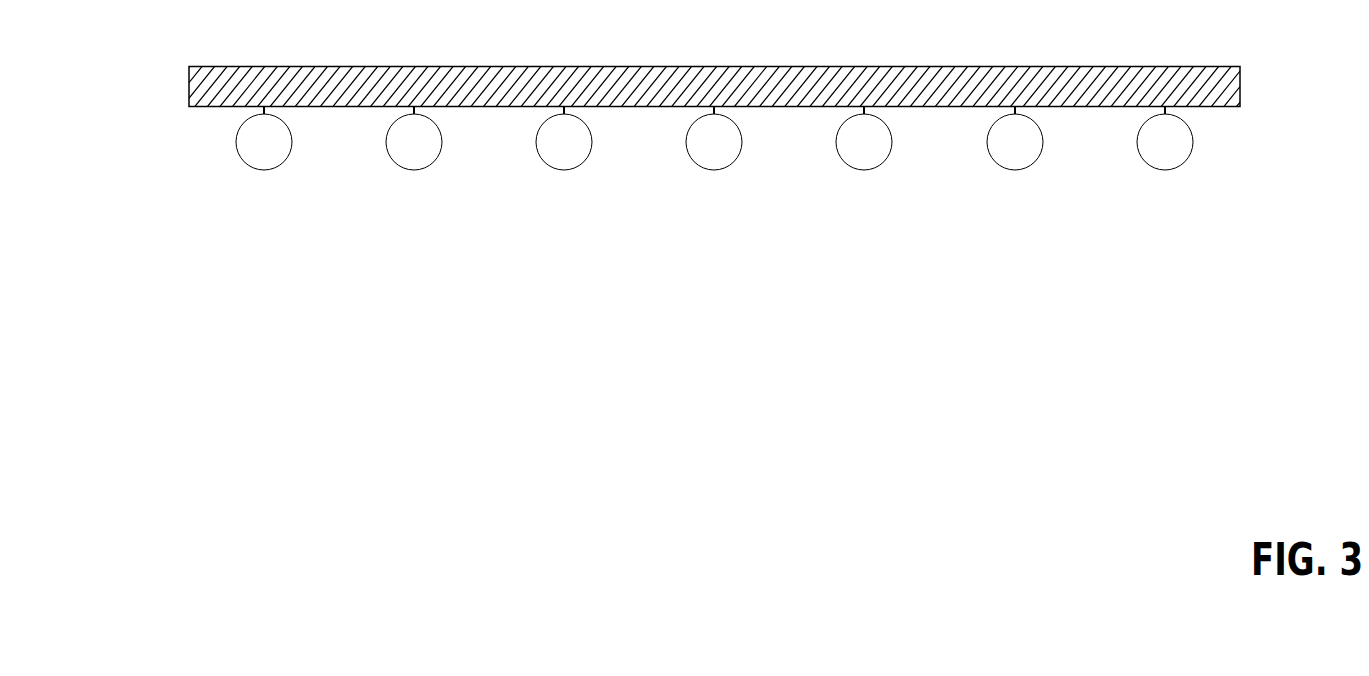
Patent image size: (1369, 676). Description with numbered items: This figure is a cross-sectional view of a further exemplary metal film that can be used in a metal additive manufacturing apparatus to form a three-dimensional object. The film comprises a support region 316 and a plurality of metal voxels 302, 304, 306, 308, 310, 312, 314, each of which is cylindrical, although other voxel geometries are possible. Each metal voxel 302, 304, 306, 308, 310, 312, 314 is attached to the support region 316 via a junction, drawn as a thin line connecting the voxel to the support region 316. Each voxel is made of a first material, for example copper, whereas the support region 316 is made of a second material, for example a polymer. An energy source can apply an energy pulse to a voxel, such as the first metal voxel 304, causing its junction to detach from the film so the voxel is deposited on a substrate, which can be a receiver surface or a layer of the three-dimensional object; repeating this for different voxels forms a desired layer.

The metal voxel 302 is at (262, 170).
The first metal voxel 304 is at (412, 170).
The metal voxel 306 is at (562, 170).
The metal voxel 308 is at (712, 170).
The metal voxel 310 is at (862, 170).
The metal voxel 312 is at (1013, 170).
The metal voxel 314 is at (1163, 170).
The support region 316 is at (189, 82).